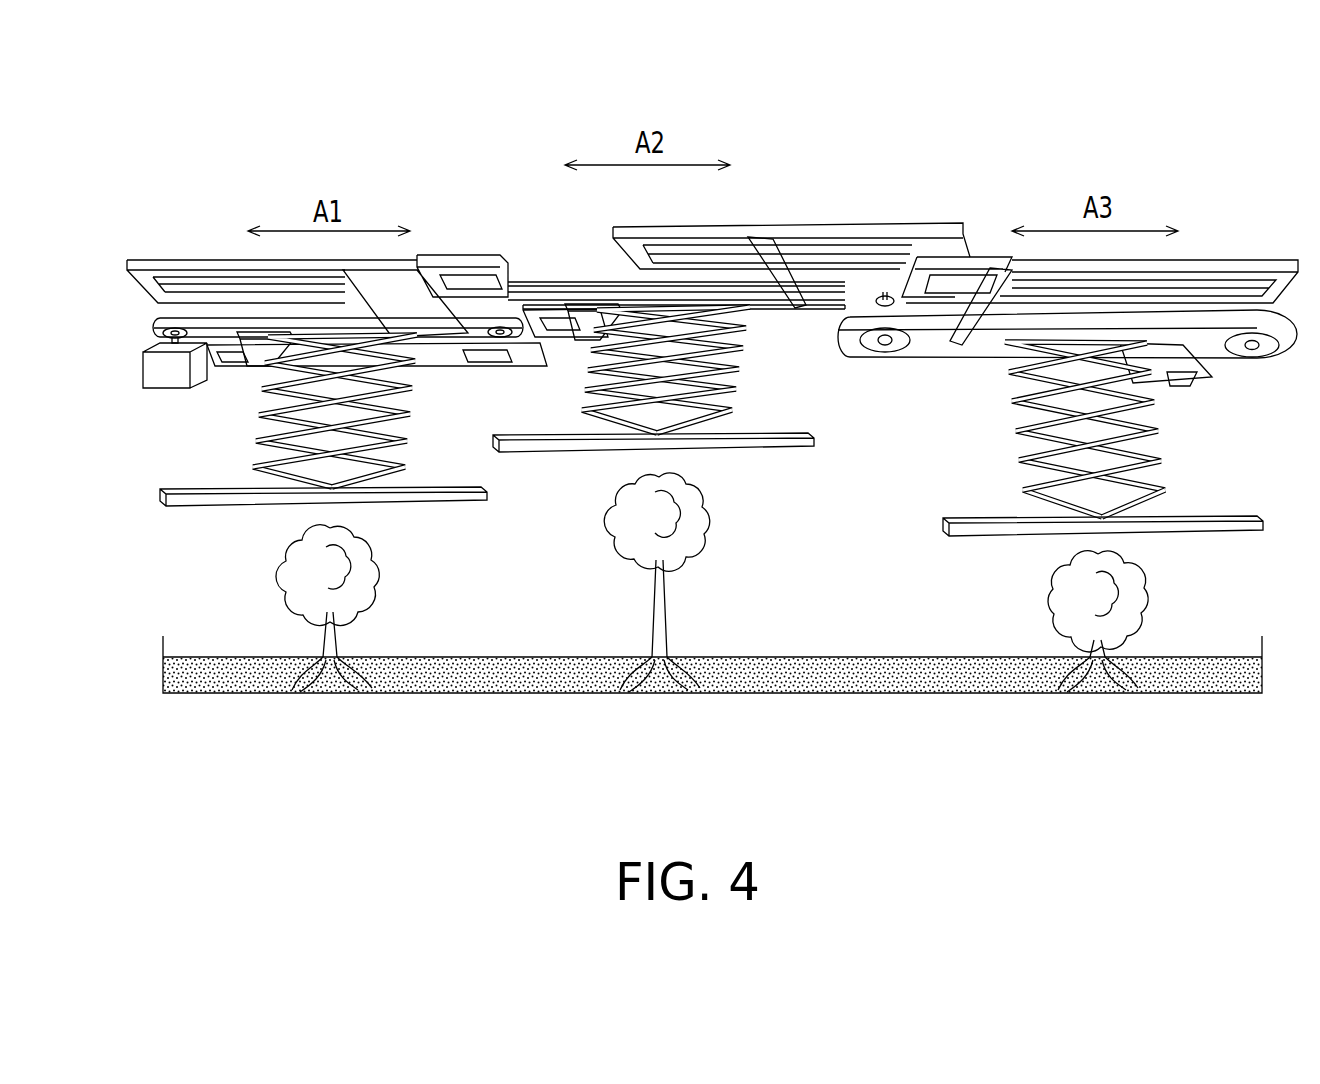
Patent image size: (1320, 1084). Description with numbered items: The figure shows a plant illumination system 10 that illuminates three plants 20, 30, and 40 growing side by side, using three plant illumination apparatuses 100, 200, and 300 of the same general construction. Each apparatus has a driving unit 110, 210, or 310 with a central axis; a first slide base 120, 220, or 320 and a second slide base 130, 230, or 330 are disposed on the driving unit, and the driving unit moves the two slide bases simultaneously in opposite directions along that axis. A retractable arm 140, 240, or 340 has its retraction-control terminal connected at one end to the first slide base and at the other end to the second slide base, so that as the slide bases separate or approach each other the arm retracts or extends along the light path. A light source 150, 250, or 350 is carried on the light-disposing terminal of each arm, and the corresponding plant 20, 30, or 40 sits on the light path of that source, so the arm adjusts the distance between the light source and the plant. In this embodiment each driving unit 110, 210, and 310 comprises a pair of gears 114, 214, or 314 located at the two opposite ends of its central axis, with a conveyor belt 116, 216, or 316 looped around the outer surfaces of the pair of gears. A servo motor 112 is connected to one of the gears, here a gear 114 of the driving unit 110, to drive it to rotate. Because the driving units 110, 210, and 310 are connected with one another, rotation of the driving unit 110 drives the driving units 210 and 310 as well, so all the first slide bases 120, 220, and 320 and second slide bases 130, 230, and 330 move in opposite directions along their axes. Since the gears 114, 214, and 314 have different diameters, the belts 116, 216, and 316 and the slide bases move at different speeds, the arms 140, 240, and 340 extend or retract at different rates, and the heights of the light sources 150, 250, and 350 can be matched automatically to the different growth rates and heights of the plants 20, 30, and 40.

The plant illumination system 10 is at (1311, 774).
The plant 20 is at (383, 600).
The plant 30 is at (713, 547).
The plant 40 is at (1153, 625).
The plant illumination apparatus 100 is at (472, 258).
The driving unit 110 is at (162, 319).
The servo motor 112 is at (176, 386).
The gear 114 is at (164, 334).
The conveyor belt 116 is at (207, 320).
The first slide base 120 is at (413, 297).
The second slide base 130 is at (260, 347).
The retractable arm 140 is at (260, 455).
The light source 150 is at (187, 505).
The plant illumination apparatus 200 is at (848, 230).
The driving unit 210 is at (535, 290).
The gear 214 is at (475, 340).
The conveyor belt 216 is at (557, 290).
The first slide base 220 is at (731, 268).
The second slide base 230 is at (580, 315).
The retractable arm 240 is at (731, 401).
The light source 250 is at (752, 448).
The plant illumination apparatus 300 is at (1210, 263).
The driving unit 310 is at (1284, 348).
The gear 314 is at (872, 352).
The conveyor belt 316 is at (932, 318).
The first slide base 320 is at (1010, 305).
The second slide base 330 is at (1160, 357).
The retractable arm 340 is at (1160, 497).
The light source 350 is at (1203, 532).